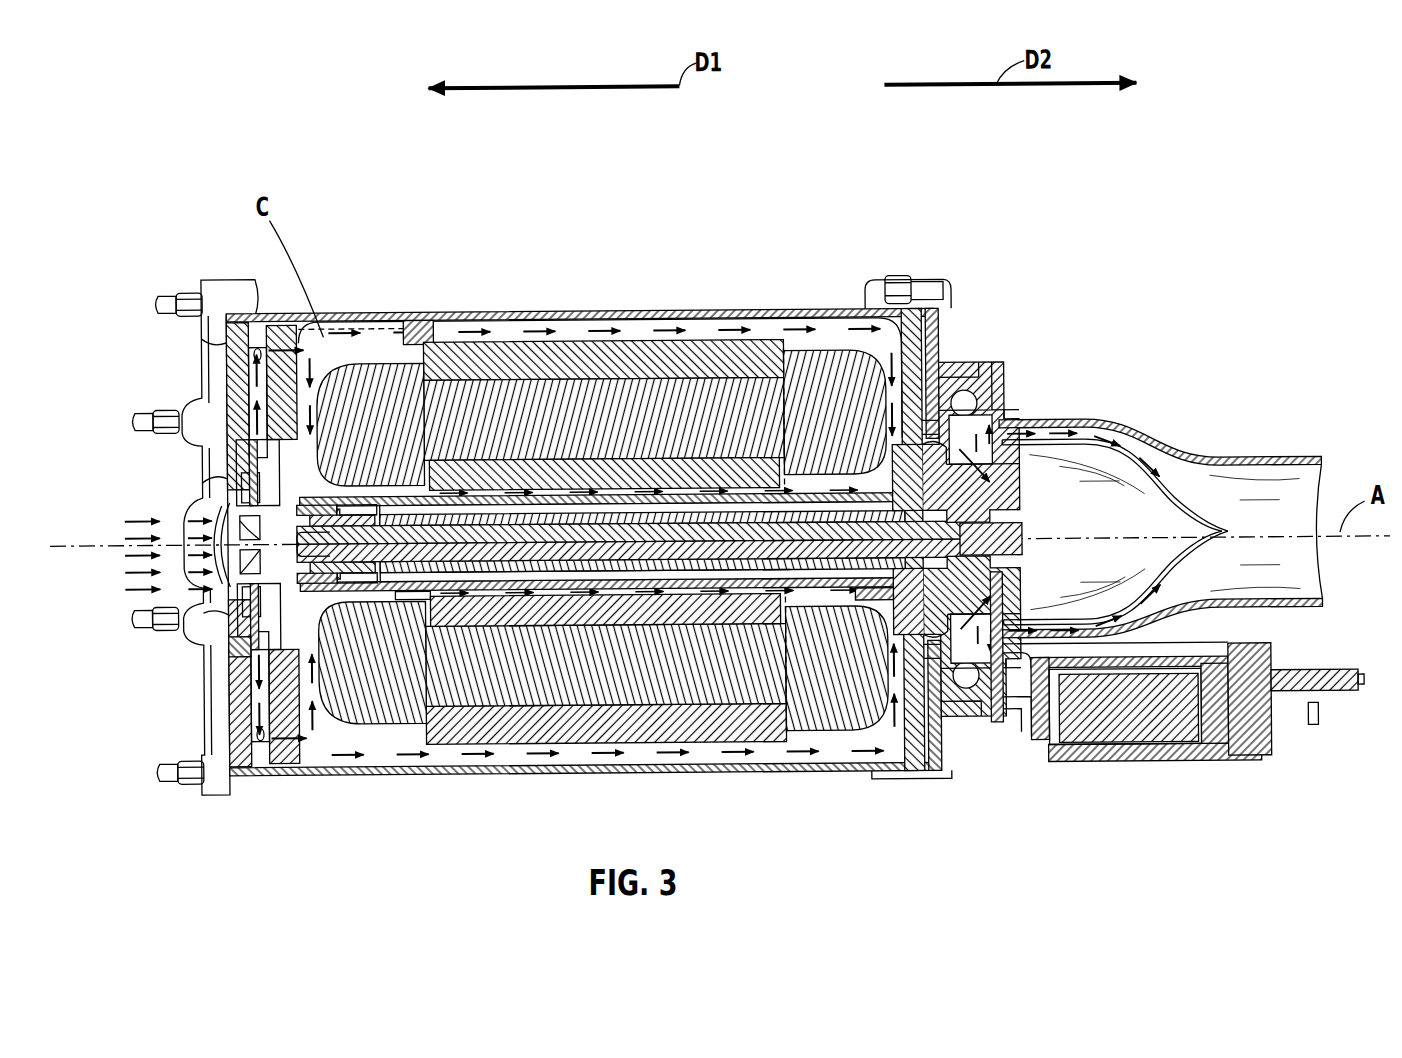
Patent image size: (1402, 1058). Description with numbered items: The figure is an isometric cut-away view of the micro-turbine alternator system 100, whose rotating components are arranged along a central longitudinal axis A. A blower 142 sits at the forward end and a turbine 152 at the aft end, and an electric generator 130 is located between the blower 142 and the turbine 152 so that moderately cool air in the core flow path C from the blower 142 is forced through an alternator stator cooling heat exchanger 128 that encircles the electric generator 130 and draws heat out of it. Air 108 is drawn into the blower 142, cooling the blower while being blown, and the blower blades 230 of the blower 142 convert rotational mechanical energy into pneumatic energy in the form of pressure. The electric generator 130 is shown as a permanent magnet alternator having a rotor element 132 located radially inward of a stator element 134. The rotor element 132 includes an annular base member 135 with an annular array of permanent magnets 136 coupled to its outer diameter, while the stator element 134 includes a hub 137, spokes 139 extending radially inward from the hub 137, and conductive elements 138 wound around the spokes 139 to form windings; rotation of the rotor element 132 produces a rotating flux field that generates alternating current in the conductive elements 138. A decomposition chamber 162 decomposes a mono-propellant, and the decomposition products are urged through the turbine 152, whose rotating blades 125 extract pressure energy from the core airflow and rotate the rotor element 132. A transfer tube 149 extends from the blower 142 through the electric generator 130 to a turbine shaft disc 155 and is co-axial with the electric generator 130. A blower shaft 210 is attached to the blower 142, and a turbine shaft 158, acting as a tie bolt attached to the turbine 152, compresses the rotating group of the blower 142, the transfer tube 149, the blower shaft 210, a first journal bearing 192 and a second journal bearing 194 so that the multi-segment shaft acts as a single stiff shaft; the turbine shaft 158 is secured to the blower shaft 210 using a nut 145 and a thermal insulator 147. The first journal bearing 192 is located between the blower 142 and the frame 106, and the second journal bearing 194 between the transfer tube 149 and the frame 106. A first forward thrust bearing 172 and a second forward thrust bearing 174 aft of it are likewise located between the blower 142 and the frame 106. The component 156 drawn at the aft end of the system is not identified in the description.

The micro-turbine alternator system 100 is at (99, 212).
The frame 106 is at (297, 574).
The air 108 is at (142, 594).
The blades 125 is at (993, 642).
The alternator stator cooling heat exchanger 128 is at (414, 313).
The electric generator 130 is at (430, 274).
The rotor element 132 is at (722, 507).
The stator element 134 is at (496, 341).
The annular base member 135 is at (427, 482).
The permanent magnets 136 is at (645, 489).
The hub 137 is at (537, 346).
The conductive elements 138 is at (740, 424).
The spokes 139 is at (789, 440).
The blower 142 is at (258, 601).
The nut 145 is at (233, 460).
The thermal insulator 147 is at (297, 506).
The transfer tube 149 is at (470, 577).
The turbine 152 is at (991, 496).
The turbine shaft disc 155 is at (971, 438).
The exhaust duct 156 is at (1197, 458).
The turbine shaft 158 is at (800, 561).
The decomposition chamber 162 is at (1118, 705).
The first forward thrust bearing 172 is at (240, 450).
The second forward thrust bearing 174 is at (232, 346).
The first journal bearing 192 is at (350, 579).
The second journal bearing 194 is at (873, 600).
The blower shaft 210 is at (400, 598).
The blower blades 230 is at (233, 641).